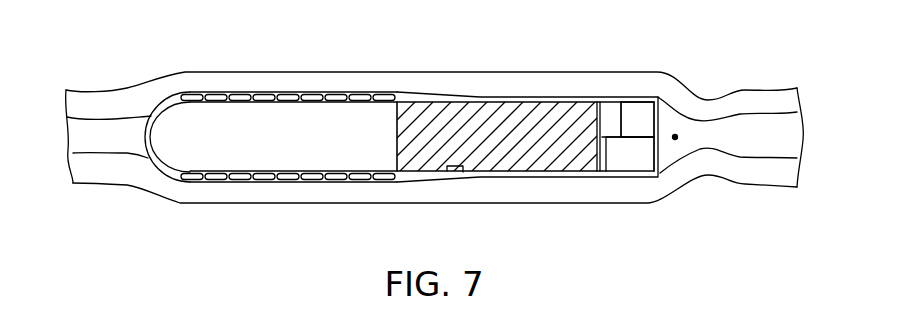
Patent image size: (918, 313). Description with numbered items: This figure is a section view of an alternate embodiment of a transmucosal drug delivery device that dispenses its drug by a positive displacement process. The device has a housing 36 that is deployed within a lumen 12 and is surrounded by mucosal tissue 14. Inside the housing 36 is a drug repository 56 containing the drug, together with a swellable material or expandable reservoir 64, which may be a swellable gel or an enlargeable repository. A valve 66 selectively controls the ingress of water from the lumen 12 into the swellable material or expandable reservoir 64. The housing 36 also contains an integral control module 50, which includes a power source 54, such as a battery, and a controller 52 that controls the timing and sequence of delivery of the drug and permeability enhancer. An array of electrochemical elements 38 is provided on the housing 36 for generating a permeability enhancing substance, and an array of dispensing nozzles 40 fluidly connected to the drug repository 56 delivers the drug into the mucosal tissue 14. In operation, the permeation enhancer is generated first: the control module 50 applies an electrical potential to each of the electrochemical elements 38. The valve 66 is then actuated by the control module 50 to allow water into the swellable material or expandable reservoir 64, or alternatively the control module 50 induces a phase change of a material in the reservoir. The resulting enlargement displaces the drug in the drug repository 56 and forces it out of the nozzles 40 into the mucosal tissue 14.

The lumen 12 is at (676, 135).
The mucosal tissue 14 is at (130, 108).
The housing 36 is at (158, 163).
The electrochemical elements 38 is at (230, 92).
The dispensing nozzles 40 is at (242, 182).
The control module 50 is at (612, 110).
The controller 52 is at (637, 113).
The power source 54 is at (627, 160).
The drug repository 56 is at (298, 117).
The swellable material or expandable reservoir 64 is at (520, 117).
The valve 66 is at (455, 173).